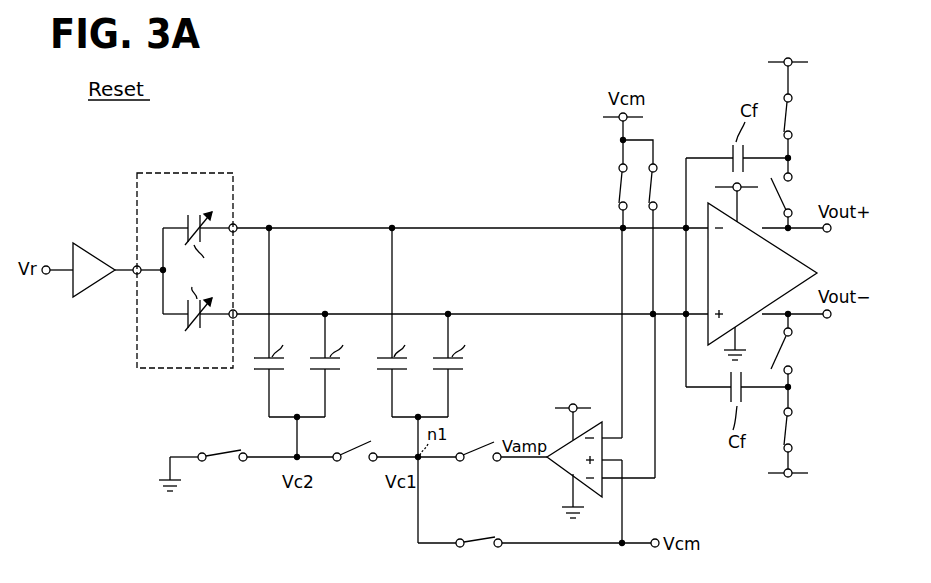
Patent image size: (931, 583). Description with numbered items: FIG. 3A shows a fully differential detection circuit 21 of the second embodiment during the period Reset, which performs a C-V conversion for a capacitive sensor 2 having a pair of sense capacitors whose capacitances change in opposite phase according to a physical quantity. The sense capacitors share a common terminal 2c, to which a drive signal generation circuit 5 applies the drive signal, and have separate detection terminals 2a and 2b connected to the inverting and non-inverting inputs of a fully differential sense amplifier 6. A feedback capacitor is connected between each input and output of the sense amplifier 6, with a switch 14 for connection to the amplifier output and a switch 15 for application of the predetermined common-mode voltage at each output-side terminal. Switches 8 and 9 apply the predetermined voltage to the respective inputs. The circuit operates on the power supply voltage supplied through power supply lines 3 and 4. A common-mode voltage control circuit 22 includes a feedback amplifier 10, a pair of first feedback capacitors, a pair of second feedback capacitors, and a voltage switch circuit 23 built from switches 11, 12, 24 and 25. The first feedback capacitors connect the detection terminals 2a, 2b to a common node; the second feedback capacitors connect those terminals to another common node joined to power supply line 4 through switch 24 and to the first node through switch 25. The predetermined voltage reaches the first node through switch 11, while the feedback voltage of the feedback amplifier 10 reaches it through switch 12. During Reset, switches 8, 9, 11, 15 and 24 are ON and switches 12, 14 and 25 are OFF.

The capacitive sensor 2 is at (188, 247).
The detection terminal 2a is at (237, 223).
The detection terminal 2b is at (237, 310).
The common terminal 2c is at (134, 265).
The power supply line 3 is at (585, 405).
The power supply line 4 is at (158, 480).
The drive signal generation circuit 5 is at (95, 250).
The fully differential sense amplifier 6 is at (706, 275).
The switch 8 is at (612, 180).
The switch 9 is at (660, 180).
The feedback amplifier 10 is at (563, 448).
The switch 11 is at (478, 535).
The switch 12 is at (475, 443).
The switch 14 is at (800, 192).
The switch 15 is at (800, 116).
The detection circuit 21 is at (503, 158).
The common-mode voltage control circuit 22 is at (480, 300).
The voltage switch circuit 23 is at (476, 403).
The switch 24 is at (230, 448).
The switch 25 is at (354, 443).